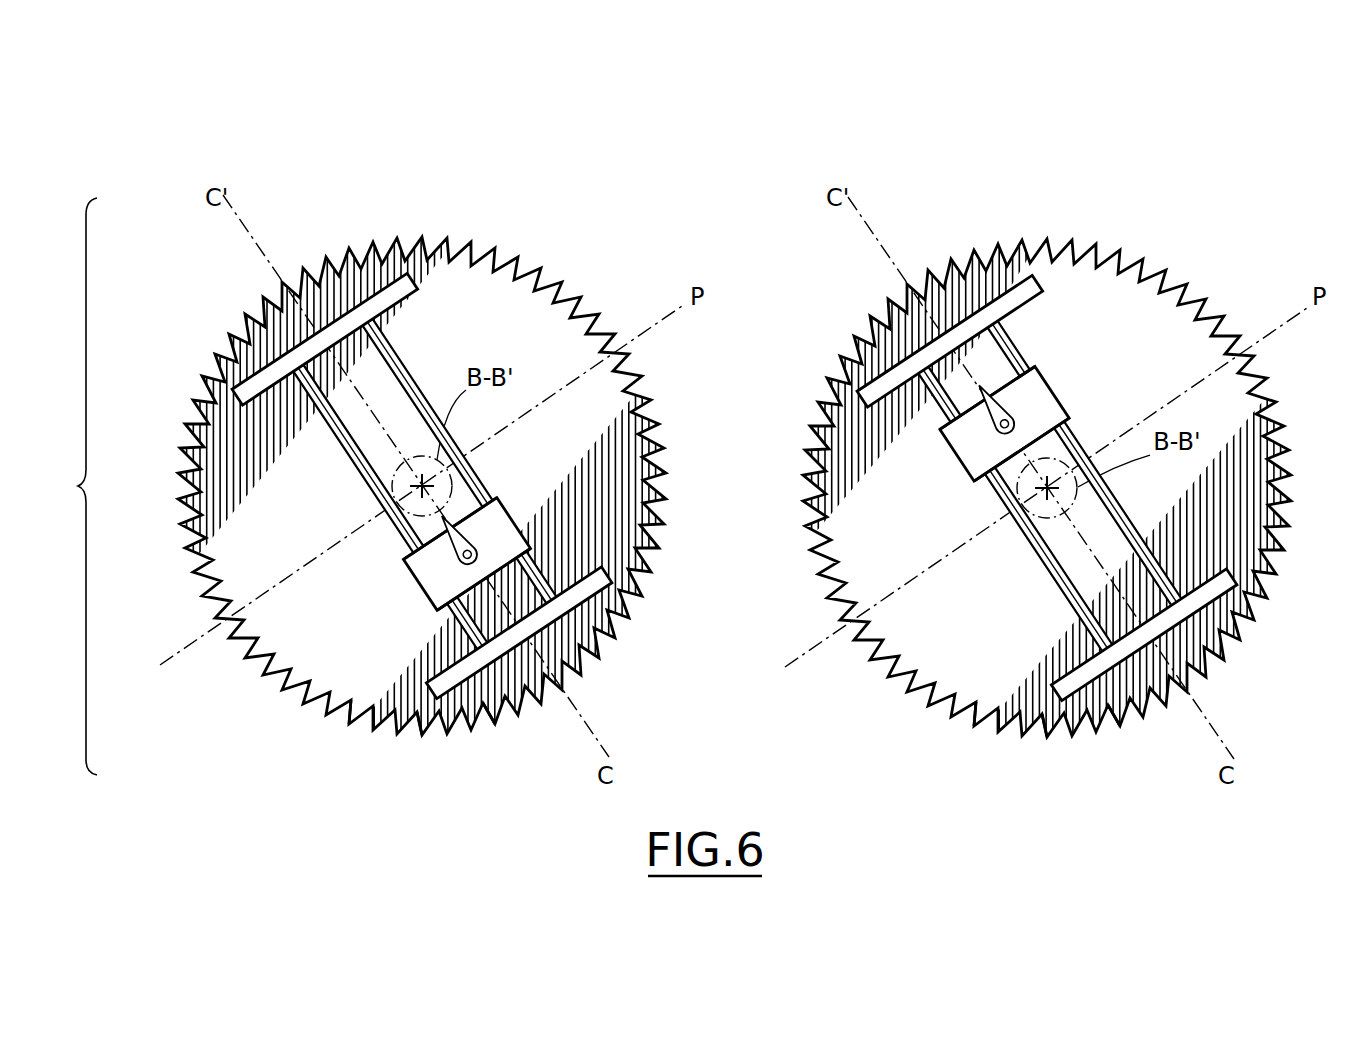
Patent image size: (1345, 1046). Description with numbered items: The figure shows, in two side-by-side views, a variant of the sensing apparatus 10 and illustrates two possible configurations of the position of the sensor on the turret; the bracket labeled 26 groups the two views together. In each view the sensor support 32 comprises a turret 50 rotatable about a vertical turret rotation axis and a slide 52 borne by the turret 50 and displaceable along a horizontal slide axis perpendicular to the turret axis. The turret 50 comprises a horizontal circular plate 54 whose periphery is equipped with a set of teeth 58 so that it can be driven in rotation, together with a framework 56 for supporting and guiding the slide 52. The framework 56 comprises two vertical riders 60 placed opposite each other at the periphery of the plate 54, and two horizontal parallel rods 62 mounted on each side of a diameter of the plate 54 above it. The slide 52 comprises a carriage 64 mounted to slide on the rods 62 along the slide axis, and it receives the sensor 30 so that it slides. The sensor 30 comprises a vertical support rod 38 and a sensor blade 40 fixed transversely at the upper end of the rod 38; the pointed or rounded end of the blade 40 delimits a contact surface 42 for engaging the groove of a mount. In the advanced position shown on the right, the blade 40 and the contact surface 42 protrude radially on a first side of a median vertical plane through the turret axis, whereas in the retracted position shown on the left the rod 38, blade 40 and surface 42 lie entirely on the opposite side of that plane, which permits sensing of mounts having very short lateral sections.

The indexing device 10 is at (355, 172).
The embodiment group 26 is at (492, 486).
The sensor 30 is at (438, 603).
The sensor support 32 is at (560, 246).
The vertical support rod 38 is at (527, 545).
The sensor blade 40 is at (478, 503).
The contact surface 42 is at (438, 514).
The turret 50 is at (238, 678).
The slide 52 is at (399, 569).
The horizontal circular plate 54 is at (336, 683).
The framework 56 is at (485, 688).
The set of teeth 58 is at (410, 745).
The vertical riders 60 is at (283, 332).
The horizontal parallel rods 62 is at (427, 411).
The carriage 64 is at (487, 515).